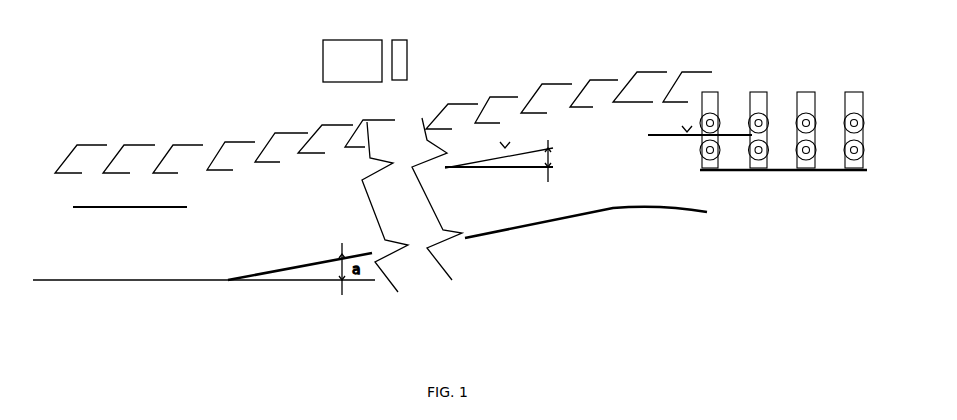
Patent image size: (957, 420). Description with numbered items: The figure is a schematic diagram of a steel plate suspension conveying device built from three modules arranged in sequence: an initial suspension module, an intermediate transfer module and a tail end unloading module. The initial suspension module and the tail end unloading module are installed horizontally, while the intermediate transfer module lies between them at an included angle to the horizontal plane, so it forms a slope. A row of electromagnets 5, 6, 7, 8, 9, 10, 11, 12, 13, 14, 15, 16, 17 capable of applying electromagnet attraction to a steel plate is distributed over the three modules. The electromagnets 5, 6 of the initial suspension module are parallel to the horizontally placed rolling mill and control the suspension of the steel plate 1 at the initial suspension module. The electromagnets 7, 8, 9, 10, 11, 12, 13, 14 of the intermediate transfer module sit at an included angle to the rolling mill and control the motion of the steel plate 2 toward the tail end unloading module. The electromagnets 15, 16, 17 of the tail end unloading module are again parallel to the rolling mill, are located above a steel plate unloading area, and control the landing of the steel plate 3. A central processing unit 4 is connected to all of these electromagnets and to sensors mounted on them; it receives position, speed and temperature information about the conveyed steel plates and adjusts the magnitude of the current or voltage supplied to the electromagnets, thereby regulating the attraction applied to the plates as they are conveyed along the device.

The steel plate at initial suspension module 1 is at (700, 152).
The steel plate at intermediate transfer module 2 is at (503, 170).
The steel plate at tail end unloading module 3 is at (130, 227).
The central processing unit 4 is at (383, 49).
The electromagnet 5 is at (687, 76).
The electromagnet 6 is at (640, 76).
The electromagnet 7 is at (594, 82).
The electromagnet 8 is at (546, 88).
The electromagnet 9 is at (496, 99).
The electromagnet 10 is at (452, 106).
The electromagnet 11 is at (371, 123).
The electromagnet 12 is at (325, 129).
The electromagnet 13 is at (281, 137).
The electromagnet 14 is at (231, 146).
The electromagnet 15 is at (178, 149).
The electromagnet 16 is at (129, 149).
The electromagnet 17 is at (81, 149).